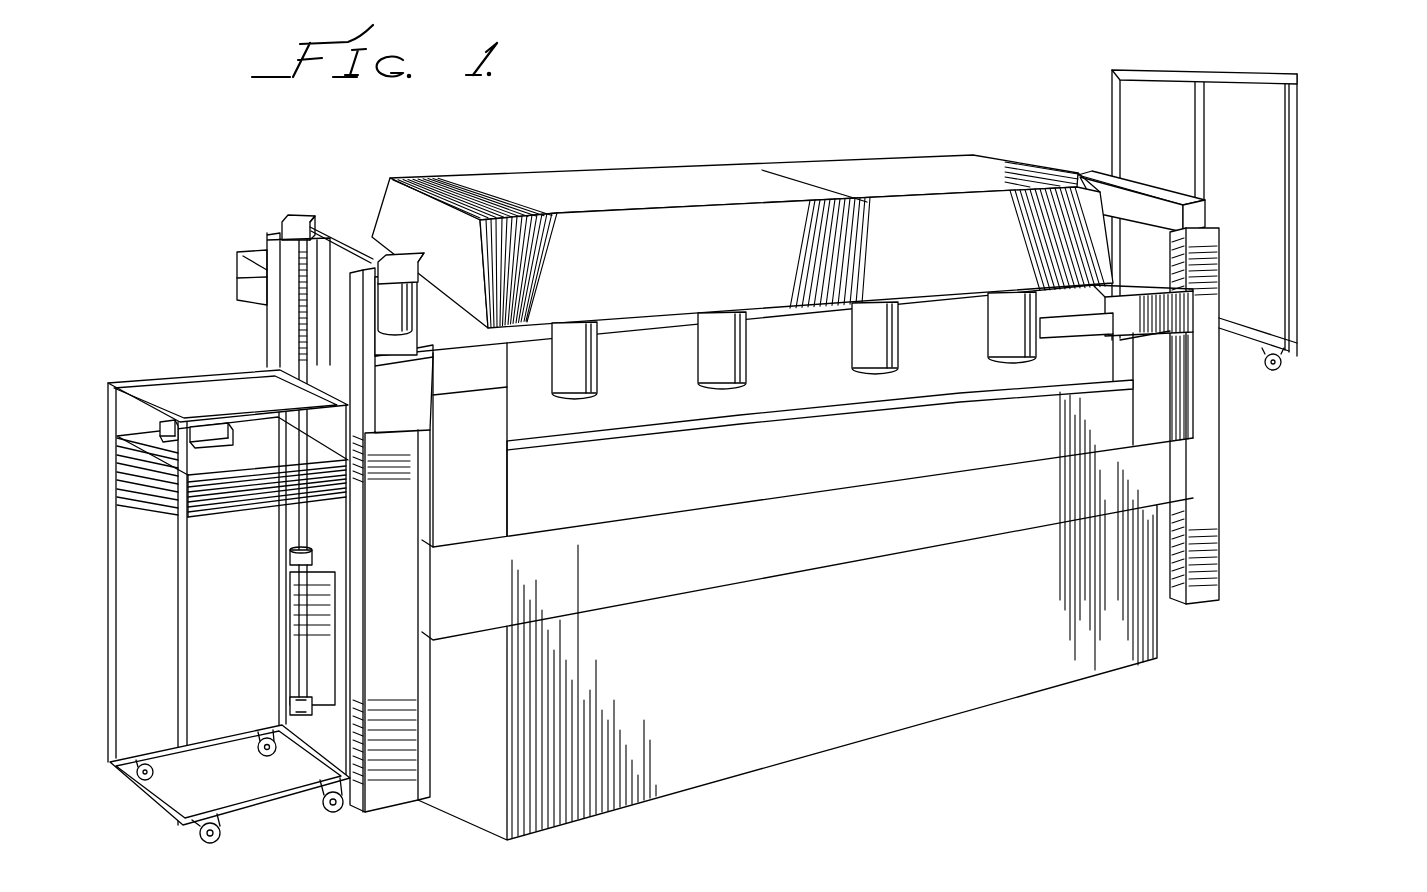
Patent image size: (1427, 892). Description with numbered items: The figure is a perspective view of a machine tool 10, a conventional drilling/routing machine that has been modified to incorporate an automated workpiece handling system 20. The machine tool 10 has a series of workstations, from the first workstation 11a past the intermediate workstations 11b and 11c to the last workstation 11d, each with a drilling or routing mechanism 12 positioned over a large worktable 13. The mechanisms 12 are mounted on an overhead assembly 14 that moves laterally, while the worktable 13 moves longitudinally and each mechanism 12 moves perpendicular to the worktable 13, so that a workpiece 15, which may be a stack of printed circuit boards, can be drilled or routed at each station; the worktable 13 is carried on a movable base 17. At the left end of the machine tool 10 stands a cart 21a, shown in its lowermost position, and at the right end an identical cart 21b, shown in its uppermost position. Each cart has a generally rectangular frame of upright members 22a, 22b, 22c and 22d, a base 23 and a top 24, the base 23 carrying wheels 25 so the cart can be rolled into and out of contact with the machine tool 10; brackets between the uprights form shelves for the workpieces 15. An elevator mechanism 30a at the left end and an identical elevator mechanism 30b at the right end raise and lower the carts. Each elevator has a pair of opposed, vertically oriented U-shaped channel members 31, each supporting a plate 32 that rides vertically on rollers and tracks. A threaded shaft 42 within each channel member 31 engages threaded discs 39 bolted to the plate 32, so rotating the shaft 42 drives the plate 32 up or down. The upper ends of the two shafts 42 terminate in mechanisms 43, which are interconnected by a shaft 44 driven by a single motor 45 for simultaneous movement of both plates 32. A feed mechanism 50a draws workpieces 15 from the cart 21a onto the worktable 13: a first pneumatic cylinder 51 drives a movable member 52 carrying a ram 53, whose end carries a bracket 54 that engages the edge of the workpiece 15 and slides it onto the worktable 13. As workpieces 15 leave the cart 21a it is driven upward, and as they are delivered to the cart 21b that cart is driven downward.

The machine tool 10 is at (760, 439).
The first workstation 11a is at (603, 308).
The intermediate workstation 11b is at (733, 298).
The intermediate workstation 11c is at (885, 292).
The last workstation 11d is at (1024, 282).
The drilling or routing mechanism 12 is at (700, 381).
The worktable 13 is at (820, 398).
The overhead assembly 14 is at (574, 232).
The workpiece 15 is at (176, 508).
The movable base 17 is at (830, 466).
The workpiece handling system 20 is at (1283, 395).
The cart 21a is at (201, 587).
The cart 21b is at (1318, 180).
The upright member 22a is at (110, 558).
The upright member 22b is at (180, 596).
The upright member 22c is at (1298, 106).
The upright member 22d is at (278, 637).
The base 23 is at (163, 799).
The top 24 is at (146, 382).
The wheel 25 is at (268, 756).
The elevator mechanism 30a is at (300, 664).
The elevator mechanism 30b is at (1240, 472).
The U-shaped channel member 31 is at (1207, 252).
The plate 32 is at (305, 600).
The disc 39 is at (290, 553).
The threaded shaft 42 is at (237, 260).
The mechanism 43 is at (298, 213).
The shaft 44 is at (340, 232).
The motor 45 is at (408, 299).
The feed mechanism 50a is at (252, 410).
The first pneumatic cylinder 51 is at (275, 435).
The movable member 52 is at (219, 436).
The ram 53 is at (158, 440).
The bracket 54 is at (167, 463).